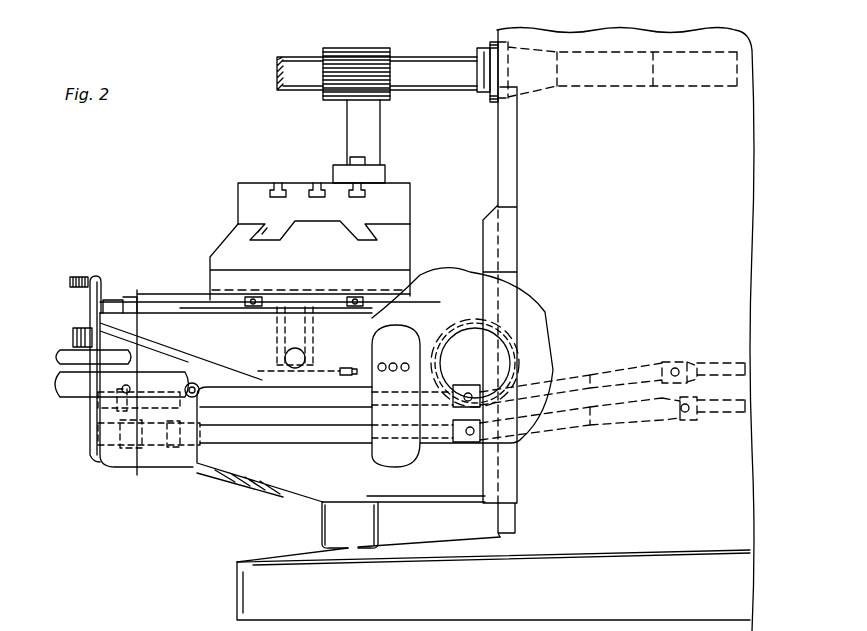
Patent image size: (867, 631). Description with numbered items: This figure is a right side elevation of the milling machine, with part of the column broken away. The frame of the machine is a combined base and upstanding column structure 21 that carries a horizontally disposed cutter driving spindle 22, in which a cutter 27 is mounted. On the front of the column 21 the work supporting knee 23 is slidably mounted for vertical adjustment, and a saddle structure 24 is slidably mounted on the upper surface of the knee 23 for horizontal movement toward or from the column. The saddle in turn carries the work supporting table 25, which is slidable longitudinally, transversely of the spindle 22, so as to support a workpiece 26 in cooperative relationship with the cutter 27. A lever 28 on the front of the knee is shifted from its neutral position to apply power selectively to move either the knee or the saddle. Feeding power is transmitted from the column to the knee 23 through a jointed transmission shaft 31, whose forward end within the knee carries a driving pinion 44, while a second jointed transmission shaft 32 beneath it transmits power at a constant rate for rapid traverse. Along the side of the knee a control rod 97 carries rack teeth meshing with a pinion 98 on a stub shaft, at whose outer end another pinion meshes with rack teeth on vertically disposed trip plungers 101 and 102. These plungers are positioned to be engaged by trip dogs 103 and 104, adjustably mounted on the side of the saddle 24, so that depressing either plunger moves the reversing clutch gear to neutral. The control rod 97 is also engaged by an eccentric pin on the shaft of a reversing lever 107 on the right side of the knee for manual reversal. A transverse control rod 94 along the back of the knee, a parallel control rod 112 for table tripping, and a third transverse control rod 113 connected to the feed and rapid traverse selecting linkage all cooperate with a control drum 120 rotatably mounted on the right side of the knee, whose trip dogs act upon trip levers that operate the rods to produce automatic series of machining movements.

The combined base and upstanding column structure 21 is at (498, 152).
The cutter driving spindle 22 is at (490, 40).
The work supporting knee 23 is at (288, 482).
The saddle structure 24 is at (232, 248).
The work supporting table 25 is at (257, 190).
The workpiece 26 is at (357, 130).
The cutter 27 is at (362, 50).
The lever 28 is at (70, 285).
The jointed transmission shaft 31 is at (630, 348).
The second jointed transmission shaft 32 is at (618, 415).
The driving pinion 44 is at (113, 412).
The transverse control rod 94 is at (393, 362).
The control rod 97 is at (258, 373).
The pinion 98 is at (287, 362).
The trip plunger 101 is at (313, 327).
The trip plunger 102 is at (277, 330).
The trip dog 103 is at (355, 297).
The trip dog 104 is at (254, 297).
The reversing lever 107 is at (167, 367).
The control rod 112 is at (410, 346).
The third transverse control rod 113 is at (378, 362).
The control drum 120 is at (477, 355).